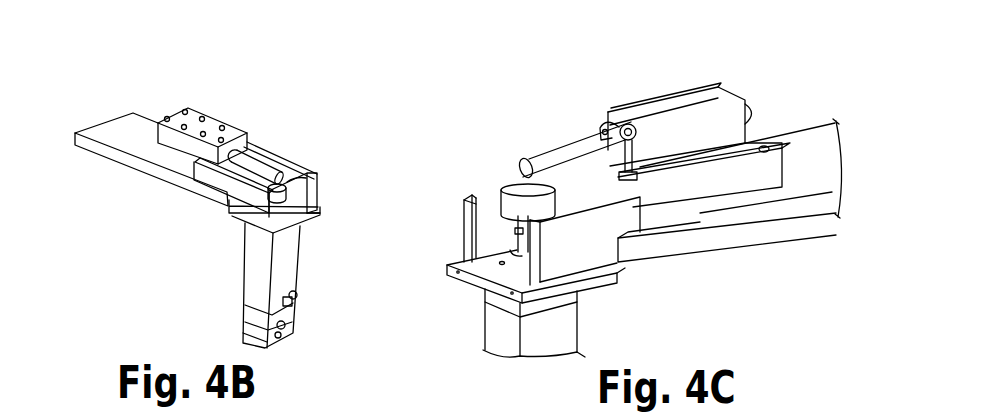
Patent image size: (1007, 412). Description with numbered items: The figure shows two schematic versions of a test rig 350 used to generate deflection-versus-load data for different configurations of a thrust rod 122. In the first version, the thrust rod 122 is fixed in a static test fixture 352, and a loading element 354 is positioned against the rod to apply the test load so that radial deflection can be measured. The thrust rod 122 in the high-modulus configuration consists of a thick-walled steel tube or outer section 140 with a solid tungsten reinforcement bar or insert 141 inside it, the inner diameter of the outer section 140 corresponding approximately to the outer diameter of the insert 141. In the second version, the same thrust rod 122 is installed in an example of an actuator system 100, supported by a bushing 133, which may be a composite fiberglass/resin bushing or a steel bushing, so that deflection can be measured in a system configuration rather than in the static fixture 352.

In FIG. 4C, the actuator system 100 is at (697, 102).
In FIG. 4B, the thrust rod 122 is at (303, 130).
In FIG. 4C, the thrust rod 122 is at (533, 106).
In FIG. 4C, the bushing 133 is at (600, 121).
In FIG. 4B, the outer section 140 is at (263, 170).
In FIG. 4C, the outer section 140 is at (550, 153).
In FIG. 4B, the insert 141 is at (276, 178).
In FIG. 4C, the insert 141 is at (522, 172).
In FIG. 4B, the test rig 350 is at (101, 110).
In FIG. 4C, the test rig 350 is at (572, 79).
In FIG. 4B, the static test fixture 352 is at (197, 117).
In FIG. 4B, the loading element 354 is at (290, 184).
In FIG. 4C, the loading element 354 is at (501, 202).